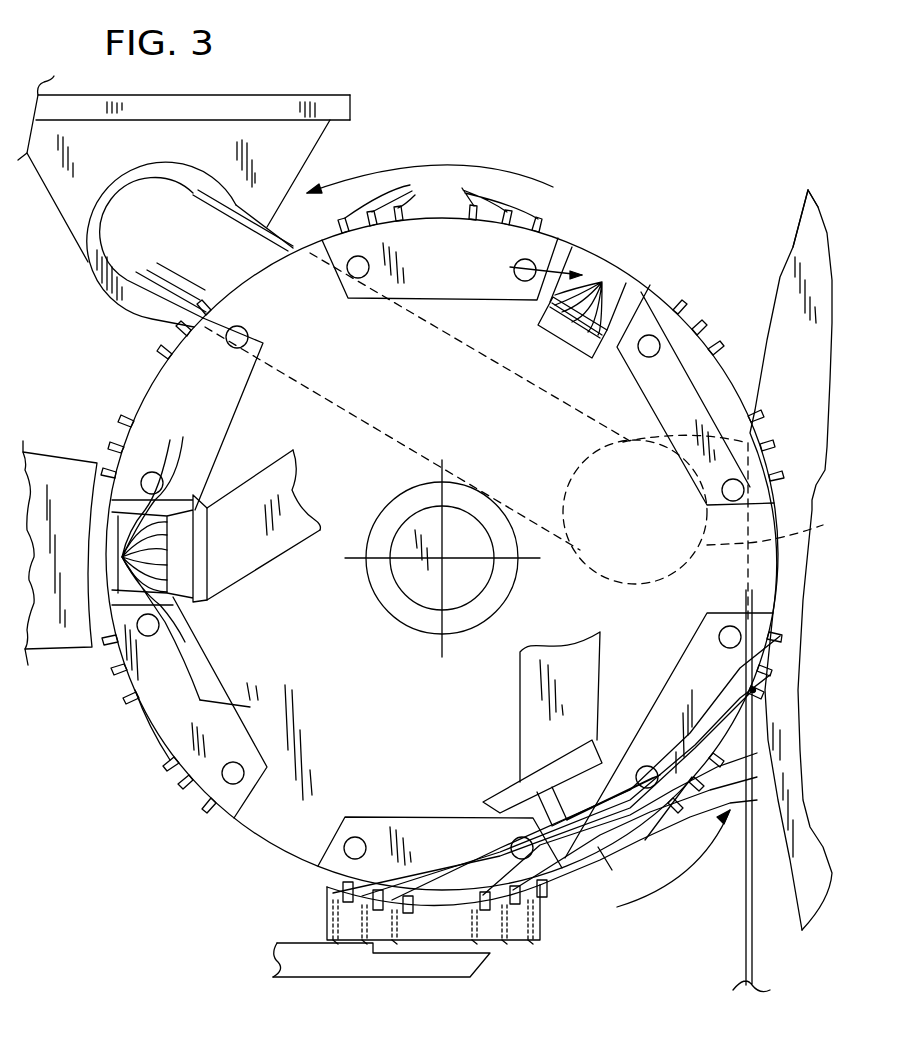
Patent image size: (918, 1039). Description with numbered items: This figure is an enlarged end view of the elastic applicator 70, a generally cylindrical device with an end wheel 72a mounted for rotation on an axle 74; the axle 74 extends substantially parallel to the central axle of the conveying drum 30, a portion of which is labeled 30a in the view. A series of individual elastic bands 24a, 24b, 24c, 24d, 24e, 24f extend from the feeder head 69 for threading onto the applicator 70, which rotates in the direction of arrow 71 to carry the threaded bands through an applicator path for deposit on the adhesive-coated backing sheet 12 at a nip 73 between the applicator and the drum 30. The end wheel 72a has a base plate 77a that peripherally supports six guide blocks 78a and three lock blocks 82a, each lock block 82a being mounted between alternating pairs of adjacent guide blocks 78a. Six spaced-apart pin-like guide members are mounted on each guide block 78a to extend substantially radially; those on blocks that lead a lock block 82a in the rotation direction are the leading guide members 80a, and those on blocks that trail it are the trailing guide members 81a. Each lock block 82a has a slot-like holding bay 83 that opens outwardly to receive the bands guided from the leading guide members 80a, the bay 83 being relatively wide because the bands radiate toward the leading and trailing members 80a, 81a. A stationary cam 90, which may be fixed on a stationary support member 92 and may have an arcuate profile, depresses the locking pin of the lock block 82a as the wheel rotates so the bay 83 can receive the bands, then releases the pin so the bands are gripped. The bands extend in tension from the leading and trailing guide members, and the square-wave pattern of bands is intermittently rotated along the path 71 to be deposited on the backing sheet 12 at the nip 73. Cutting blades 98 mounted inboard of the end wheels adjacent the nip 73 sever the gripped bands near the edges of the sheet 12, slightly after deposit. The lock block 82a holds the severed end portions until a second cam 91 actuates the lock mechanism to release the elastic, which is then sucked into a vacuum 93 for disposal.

The backing sheet 12 is at (752, 888).
The elastic band 24a is at (757, 800).
The elastic band 24b is at (757, 777).
The elastic band 24c is at (757, 753).
The elastic band 24d is at (755, 690).
The elastic band 24e is at (771, 668).
The elastic band 24f is at (777, 633).
The drum 30 is at (820, 295).
The blade tip 30a is at (783, 275).
The feeder head 69 is at (517, 955).
The elastic applicator 70 is at (622, 247).
The arrow 71 is at (443, 163).
The end wheel 72a is at (150, 725).
The nip 73 is at (815, 527).
The axle 74 is at (410, 577).
The base plate 77a is at (250, 707).
The guide block 78a is at (470, 268).
The leading guide members 80a is at (705, 866).
The trailing guide members 81a is at (720, 348).
The lock block 82a is at (623, 285).
The holding bay 83 is at (602, 282).
The stationary cam 90 is at (500, 782).
The second cam 91 is at (193, 492).
The stationary support member 92 is at (600, 700).
The vacuum 93 is at (65, 450).
The cutting blades 98 is at (562, 503).